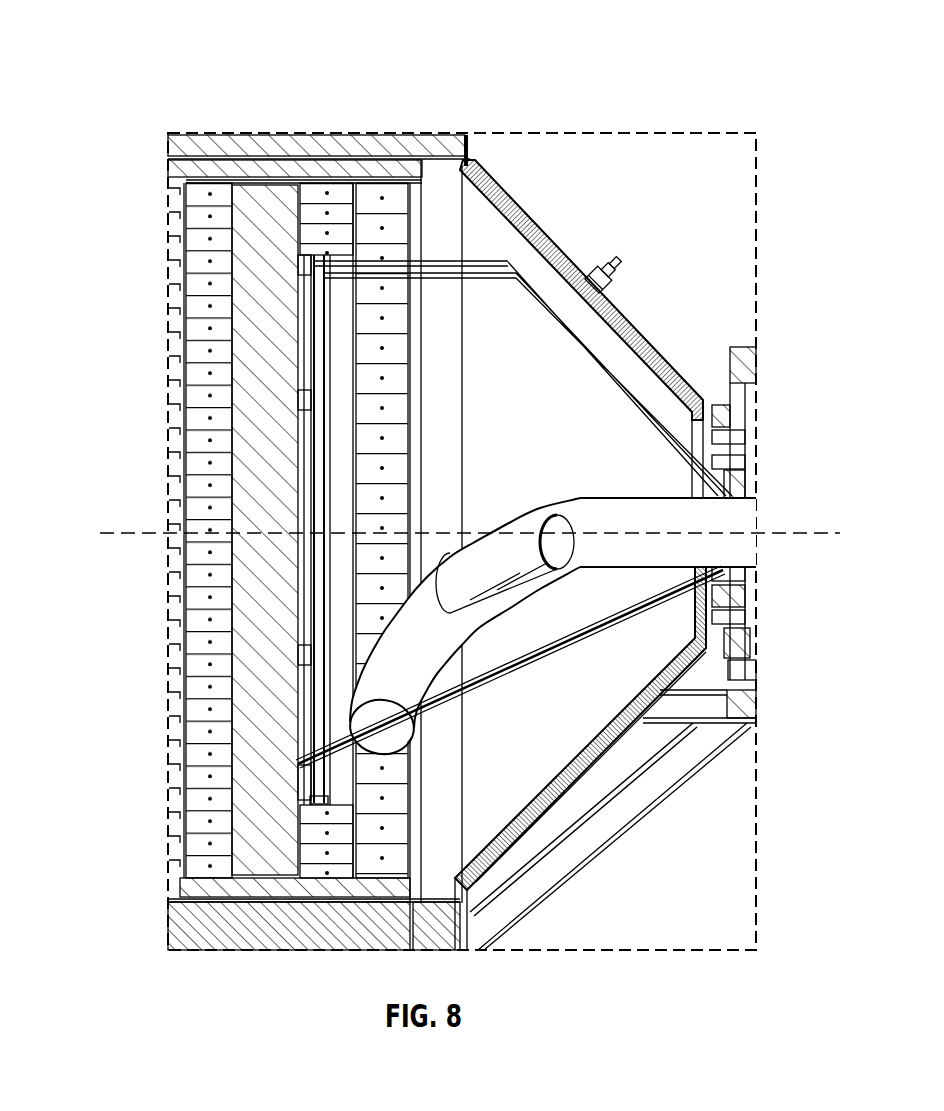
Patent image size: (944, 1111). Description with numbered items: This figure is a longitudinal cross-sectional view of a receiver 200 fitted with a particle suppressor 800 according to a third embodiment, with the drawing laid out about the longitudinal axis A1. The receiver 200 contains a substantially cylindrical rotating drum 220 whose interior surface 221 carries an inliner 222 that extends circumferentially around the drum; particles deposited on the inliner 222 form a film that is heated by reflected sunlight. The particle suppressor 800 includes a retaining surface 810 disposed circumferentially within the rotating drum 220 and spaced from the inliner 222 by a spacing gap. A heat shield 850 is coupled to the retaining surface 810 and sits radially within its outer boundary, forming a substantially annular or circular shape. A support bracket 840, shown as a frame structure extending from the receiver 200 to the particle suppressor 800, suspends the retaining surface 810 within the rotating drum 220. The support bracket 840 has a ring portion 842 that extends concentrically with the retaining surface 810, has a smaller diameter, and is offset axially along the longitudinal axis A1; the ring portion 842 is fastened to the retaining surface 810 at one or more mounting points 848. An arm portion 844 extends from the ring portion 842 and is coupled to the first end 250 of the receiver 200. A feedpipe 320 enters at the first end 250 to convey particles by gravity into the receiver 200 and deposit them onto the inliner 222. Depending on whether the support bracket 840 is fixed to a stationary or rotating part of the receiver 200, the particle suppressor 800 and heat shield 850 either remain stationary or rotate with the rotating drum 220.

The receiver 200 is at (147, 37).
The retaining surface 810 is at (268, 175).
The particle suppressor 800 is at (230, 285).
The heat shield 850 is at (270, 462).
The mounting points 848 is at (310, 407).
The ring portion 842 is at (325, 480).
The support bracket 840 is at (492, 267).
The arm portion 844 is at (603, 352).
The feedpipe 320 is at (740, 530).
The first end 250 is at (745, 418).
The interior surface 221 is at (120, 530).
The inliner 222 is at (196, 830).
The rotating drum 220 is at (184, 892).
The longitudinal axis A1 is at (490, 536).